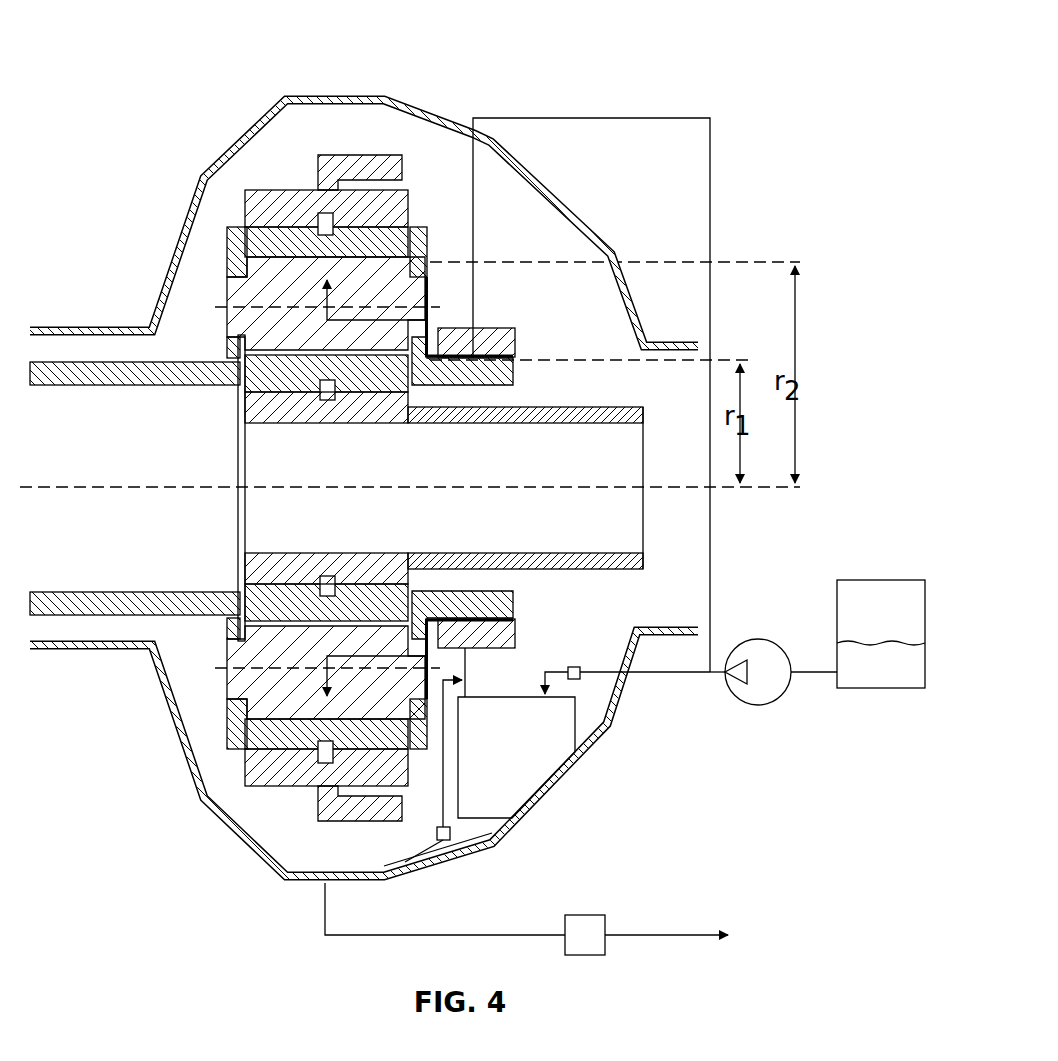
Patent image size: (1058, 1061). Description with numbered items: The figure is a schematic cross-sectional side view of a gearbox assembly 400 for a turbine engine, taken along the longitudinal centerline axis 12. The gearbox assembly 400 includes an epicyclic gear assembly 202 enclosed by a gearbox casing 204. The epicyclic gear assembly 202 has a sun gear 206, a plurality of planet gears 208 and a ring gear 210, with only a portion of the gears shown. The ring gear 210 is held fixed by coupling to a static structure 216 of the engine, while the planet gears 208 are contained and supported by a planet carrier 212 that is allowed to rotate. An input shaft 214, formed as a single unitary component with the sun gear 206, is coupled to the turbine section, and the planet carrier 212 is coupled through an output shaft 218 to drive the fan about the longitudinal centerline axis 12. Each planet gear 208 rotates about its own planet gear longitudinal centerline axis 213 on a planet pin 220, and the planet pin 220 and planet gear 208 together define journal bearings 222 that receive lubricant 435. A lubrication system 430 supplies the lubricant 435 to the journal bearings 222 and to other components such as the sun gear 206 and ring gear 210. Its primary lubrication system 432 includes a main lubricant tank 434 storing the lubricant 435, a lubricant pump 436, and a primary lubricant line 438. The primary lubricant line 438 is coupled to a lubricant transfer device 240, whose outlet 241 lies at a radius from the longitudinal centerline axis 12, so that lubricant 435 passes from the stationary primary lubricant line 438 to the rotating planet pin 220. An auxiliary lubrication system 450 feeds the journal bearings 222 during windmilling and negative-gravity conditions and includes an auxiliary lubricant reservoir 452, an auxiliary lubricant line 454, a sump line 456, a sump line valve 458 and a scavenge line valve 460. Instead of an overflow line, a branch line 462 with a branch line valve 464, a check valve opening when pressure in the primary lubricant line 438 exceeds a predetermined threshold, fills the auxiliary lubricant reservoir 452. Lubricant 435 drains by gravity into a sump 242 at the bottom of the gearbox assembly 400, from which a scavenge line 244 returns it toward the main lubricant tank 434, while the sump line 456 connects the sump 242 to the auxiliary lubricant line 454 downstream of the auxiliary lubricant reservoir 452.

The gearbox assembly 400 is at (236, 48).
The lubrication system 430 is at (795, 51).
The epicyclic gear assembly 202 is at (252, 172).
The gearbox casing 204 is at (205, 172).
The ring gear 210 is at (266, 200).
The static structure 216 is at (360, 166).
The planet gears 208 is at (400, 232).
The planet carrier 212 is at (430, 252).
The journal bearings 222 is at (232, 262).
The planet pin 220 is at (238, 330).
The planet gear longitudinal centerline axis 213 is at (238, 660).
The sun gear 206 is at (238, 406).
The lubricant transfer device 240 is at (504, 320).
The outlet 241 is at (516, 356).
The input shaft 214 is at (600, 412).
The output shaft 218 is at (116, 378).
The longitudinal centerline axis 12 is at (118, 486).
The primary lubricant line 438 is at (711, 182).
The primary lubrication system 432 is at (860, 528).
The main lubricant tank 434 is at (878, 579).
The lubricant 435 is at (880, 689).
The lubricant pump 436 is at (760, 639).
The auxiliary lubrication system 450 is at (624, 624).
The auxiliary lubricant reservoir 452 is at (545, 782).
The auxiliary lubricant line 454 is at (466, 662).
The sump line 456 is at (402, 866).
The sump line valve 458 is at (450, 835).
The scavenge line valve 460 is at (600, 956).
The branch line 462 is at (683, 673).
The branch line valve 464 is at (576, 666).
The sump 242 is at (282, 850).
The scavenge line 244 is at (372, 935).